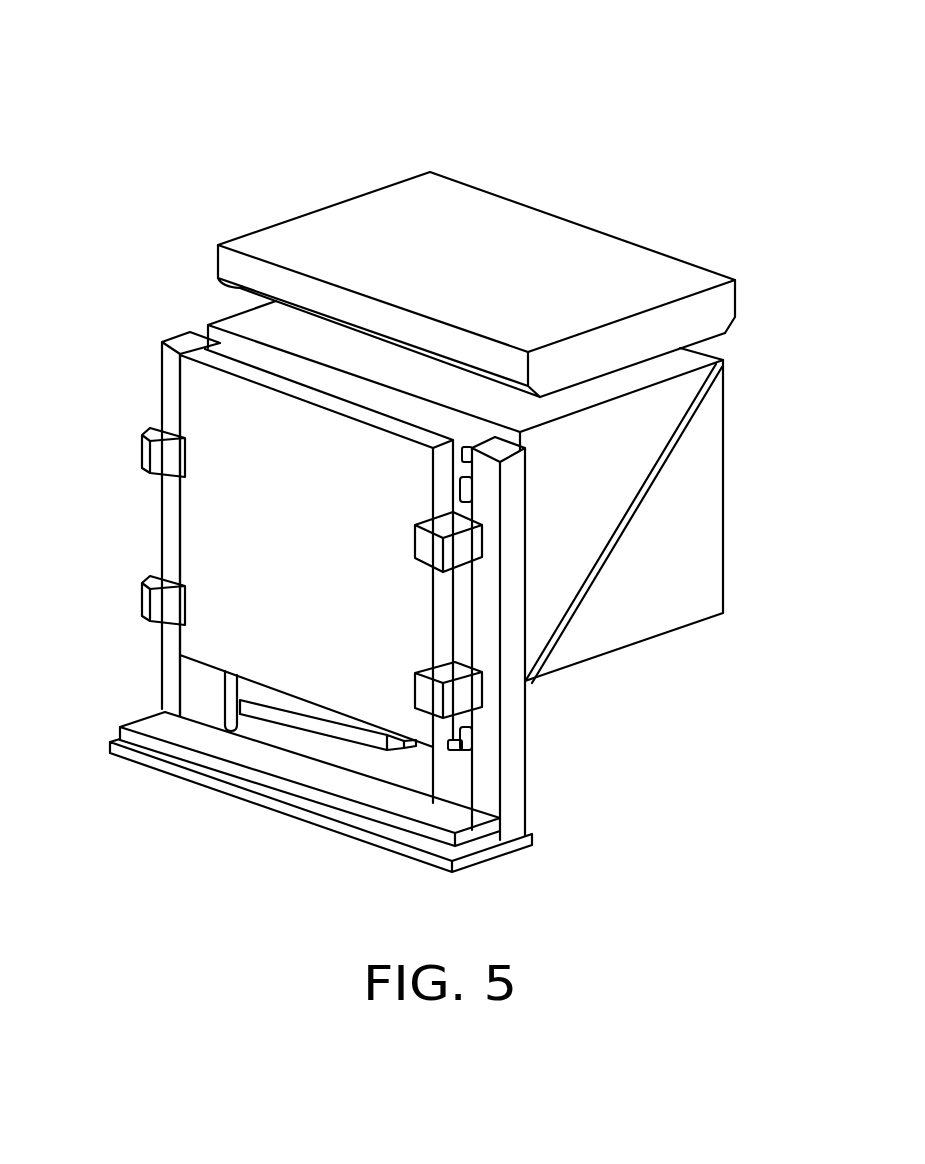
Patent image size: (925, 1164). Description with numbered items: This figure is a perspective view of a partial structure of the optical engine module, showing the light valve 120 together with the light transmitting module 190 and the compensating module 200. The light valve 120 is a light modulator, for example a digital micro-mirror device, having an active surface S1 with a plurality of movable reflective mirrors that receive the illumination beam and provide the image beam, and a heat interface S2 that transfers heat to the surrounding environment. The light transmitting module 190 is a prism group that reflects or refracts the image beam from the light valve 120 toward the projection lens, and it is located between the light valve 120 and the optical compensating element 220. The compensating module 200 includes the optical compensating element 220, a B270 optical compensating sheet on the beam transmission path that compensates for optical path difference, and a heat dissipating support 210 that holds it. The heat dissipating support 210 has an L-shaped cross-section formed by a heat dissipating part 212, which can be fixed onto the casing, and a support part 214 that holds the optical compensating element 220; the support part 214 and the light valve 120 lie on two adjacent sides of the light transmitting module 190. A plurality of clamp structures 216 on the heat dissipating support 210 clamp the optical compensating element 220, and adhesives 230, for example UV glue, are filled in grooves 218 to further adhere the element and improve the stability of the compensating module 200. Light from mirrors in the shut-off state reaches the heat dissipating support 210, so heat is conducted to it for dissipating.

The light valve 120 is at (514, 279).
The light transmitting module 190 is at (700, 528).
The compensating module 200 is at (115, 692).
The heat dissipating support 210 is at (90, 24).
The heat dissipating part 212 is at (482, 833).
The support part 214 is at (520, 713).
The clamp structures 216 is at (160, 595).
The grooves 218 is at (473, 492).
The optical compensating element 220 is at (205, 398).
The adhesives 230 is at (465, 447).
The active surface S1 is at (633, 367).
The heat interface S2 is at (528, 250).